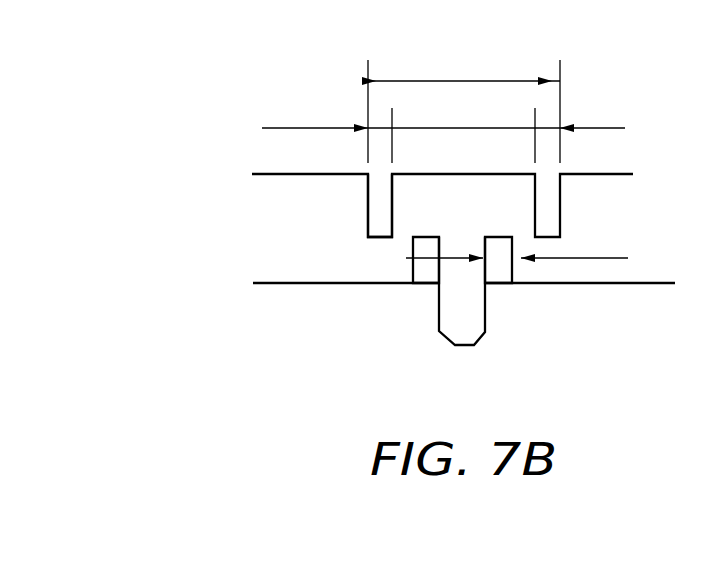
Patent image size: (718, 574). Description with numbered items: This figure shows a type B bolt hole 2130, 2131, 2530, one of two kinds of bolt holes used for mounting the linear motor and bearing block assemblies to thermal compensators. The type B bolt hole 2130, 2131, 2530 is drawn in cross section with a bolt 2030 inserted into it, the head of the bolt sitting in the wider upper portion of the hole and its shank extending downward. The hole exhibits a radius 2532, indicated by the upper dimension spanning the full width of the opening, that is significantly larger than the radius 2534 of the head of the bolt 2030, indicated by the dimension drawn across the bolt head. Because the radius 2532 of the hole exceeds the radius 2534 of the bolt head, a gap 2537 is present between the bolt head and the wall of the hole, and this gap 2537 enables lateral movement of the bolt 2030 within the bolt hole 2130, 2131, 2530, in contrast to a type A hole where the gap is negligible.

The type B bolt hole 2130 is at (294, 228).
The type B bolt hole 2131 is at (294, 228).
The type B bolt hole 2530 is at (422, 225).
The bolt 2030 is at (467, 336).
The radius of type B bolt hole 2532 is at (464, 101).
The radius of the head of the bolt 2534 is at (477, 135).
The gap 2537 is at (552, 256).